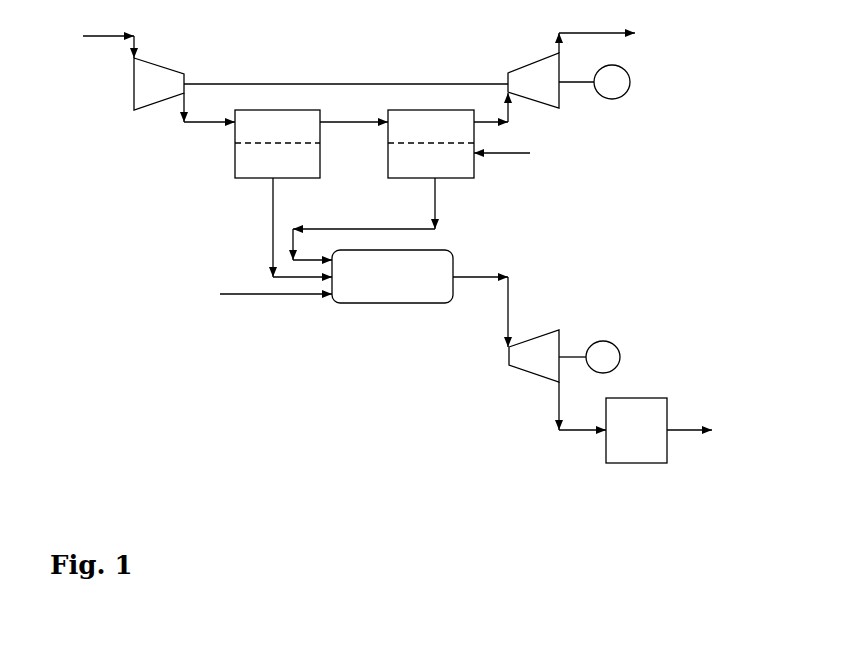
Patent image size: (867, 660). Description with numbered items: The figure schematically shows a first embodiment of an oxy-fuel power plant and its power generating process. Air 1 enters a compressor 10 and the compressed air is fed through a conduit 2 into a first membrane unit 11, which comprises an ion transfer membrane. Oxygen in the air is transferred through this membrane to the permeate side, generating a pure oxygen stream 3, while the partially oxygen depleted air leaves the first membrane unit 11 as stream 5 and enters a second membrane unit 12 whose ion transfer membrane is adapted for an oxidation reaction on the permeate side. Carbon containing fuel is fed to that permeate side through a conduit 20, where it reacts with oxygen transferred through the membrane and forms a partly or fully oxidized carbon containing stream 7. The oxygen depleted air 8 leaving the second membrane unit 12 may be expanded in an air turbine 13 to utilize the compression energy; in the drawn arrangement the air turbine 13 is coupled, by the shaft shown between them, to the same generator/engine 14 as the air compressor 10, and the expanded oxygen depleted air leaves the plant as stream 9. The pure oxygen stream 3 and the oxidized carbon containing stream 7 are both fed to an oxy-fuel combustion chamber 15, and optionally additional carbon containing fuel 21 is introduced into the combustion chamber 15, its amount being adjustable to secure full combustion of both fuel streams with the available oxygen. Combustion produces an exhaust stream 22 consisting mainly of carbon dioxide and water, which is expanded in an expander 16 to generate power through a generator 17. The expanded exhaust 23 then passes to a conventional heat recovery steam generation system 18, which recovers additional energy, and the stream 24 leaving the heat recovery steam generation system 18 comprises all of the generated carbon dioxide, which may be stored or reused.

The air 1 is at (107, 34).
The conduit 2 is at (194, 123).
The pure oxygen stream 3 is at (272, 250).
The partially oxygen depleted air stream 5 is at (345, 123).
The partly or fully oxidized carbon containing stream 7 is at (362, 227).
The oxygen depleted air 8 is at (510, 111).
The expanded oxygen depleted air stream 9 is at (578, 33).
The compressor 10 is at (159, 84).
The first membrane unit 11 is at (277, 144).
The second membrane unit 12 is at (431, 144).
The air turbine 13 is at (533, 80).
The generator/engine 14 is at (594, 82).
The oxy-fuel combustion chamber 15 is at (392, 276).
The expander 16 is at (534, 356).
The generator 17 is at (589, 357).
The Heat Recovery Steam Generation (HRSG) system 18 is at (636, 430).
The conduit 20 is at (503, 153).
The additional carbon containing fuel 21 is at (240, 294).
The exhaust stream 22 is at (478, 277).
The expanded exhaust 23 is at (555, 400).
The stream leaving the HRSG 24 is at (688, 428).